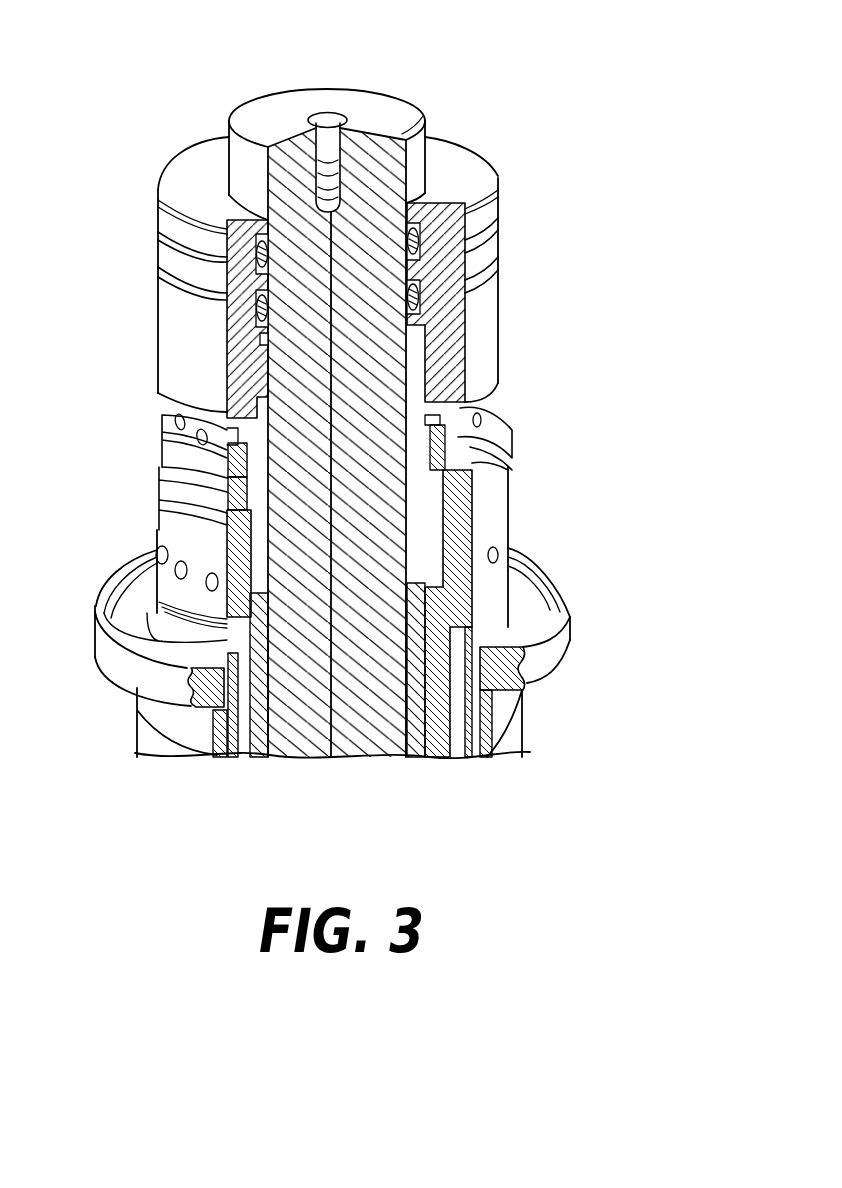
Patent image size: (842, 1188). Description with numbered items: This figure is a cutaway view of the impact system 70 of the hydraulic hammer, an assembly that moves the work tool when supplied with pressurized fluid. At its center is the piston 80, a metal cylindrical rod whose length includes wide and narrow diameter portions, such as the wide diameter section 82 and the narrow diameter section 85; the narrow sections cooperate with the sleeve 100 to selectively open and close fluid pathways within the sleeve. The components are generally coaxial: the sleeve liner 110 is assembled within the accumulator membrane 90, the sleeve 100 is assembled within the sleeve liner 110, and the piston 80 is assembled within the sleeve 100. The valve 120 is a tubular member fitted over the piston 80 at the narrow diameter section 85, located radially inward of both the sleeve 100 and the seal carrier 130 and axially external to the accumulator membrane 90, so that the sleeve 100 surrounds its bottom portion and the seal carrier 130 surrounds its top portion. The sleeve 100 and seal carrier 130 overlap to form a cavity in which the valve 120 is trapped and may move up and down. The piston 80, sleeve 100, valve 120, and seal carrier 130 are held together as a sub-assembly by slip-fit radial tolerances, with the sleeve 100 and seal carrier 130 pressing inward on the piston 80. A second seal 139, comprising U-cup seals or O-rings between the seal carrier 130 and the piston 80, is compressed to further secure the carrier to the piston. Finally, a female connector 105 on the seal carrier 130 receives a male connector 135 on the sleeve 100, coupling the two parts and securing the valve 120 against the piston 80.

The impact system 70 is at (527, 781).
The piston 80 is at (373, 150).
The wide diameter section 82 is at (266, 727).
The narrow diameter section 85 is at (248, 176).
The accumulator membrane 90 is at (552, 650).
The sleeve 100 is at (500, 534).
The female connector 105 is at (160, 461).
The sleeve liner 110 is at (498, 632).
The valve 120 is at (500, 467).
The seal carrier 130 is at (488, 332).
The male connector 135 is at (157, 518).
The second seal 139 is at (257, 253).